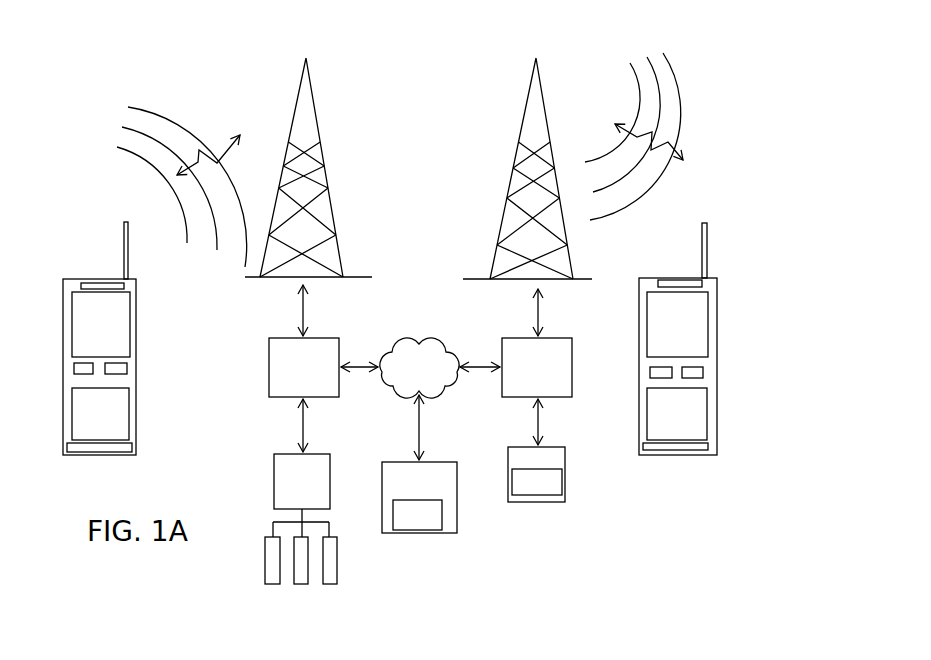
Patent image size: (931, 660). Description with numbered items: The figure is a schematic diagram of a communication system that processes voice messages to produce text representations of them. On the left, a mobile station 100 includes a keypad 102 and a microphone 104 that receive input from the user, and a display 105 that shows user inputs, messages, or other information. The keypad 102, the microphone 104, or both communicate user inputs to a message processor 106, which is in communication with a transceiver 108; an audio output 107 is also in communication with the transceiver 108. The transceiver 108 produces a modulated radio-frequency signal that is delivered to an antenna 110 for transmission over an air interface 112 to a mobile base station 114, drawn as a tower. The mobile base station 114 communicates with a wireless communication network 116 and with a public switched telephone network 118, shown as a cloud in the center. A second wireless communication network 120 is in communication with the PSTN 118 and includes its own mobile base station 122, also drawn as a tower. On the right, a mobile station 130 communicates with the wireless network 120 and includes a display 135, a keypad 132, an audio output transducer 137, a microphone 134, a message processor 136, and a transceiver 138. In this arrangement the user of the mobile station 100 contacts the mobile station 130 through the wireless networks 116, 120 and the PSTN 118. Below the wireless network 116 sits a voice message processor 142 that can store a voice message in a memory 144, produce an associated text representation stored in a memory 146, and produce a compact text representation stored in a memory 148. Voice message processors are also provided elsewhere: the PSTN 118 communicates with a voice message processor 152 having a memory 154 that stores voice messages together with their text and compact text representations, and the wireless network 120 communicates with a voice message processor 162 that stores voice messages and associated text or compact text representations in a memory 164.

The mobile station 100 is at (119, 359).
The keypad 102 is at (128, 398).
The microphone 104 is at (113, 452).
The display 105 is at (133, 340).
The message processor 106 is at (133, 372).
The audio output 107 is at (135, 282).
The transceiver 108 is at (72, 365).
The antenna 110 is at (124, 250).
The air interface 112 is at (243, 130).
The mobile base station 114 is at (327, 165).
The wireless communication network 116 is at (339, 352).
The public switched telephone network (PSTN) 118 is at (420, 340).
The wireless communication network 120 is at (573, 353).
The mobile base station 122 is at (522, 122).
The mobile station 130 is at (692, 348).
The keypad 132 is at (708, 413).
The microphone 134 is at (660, 448).
The display 135 is at (645, 307).
The message processor 136 is at (705, 373).
The audio output transducer 137 is at (703, 286).
The transceiver 138 is at (650, 373).
The voice message processor 142 is at (330, 480).
The memory 144 is at (264, 548).
The memory 146 is at (301, 585).
The memory 148 is at (338, 558).
The voice message processor 152 is at (450, 514).
The memory 154 is at (408, 530).
The voice message processor 162 is at (561, 485).
The memory 164 is at (537, 501).